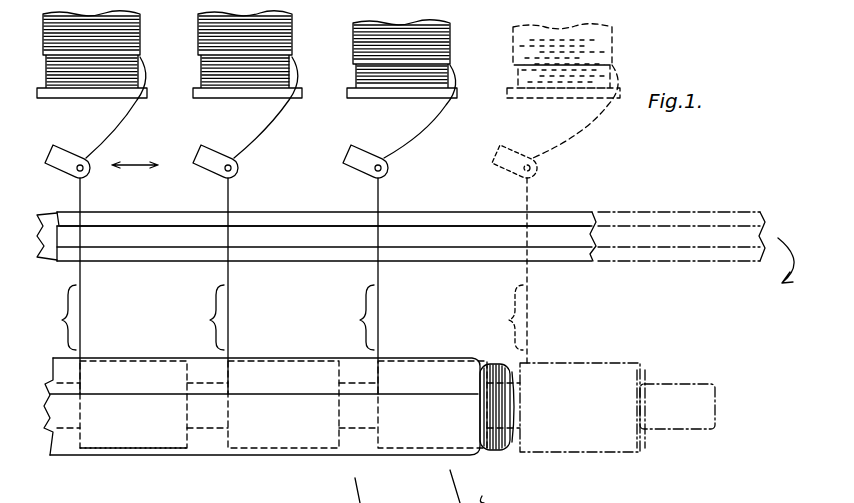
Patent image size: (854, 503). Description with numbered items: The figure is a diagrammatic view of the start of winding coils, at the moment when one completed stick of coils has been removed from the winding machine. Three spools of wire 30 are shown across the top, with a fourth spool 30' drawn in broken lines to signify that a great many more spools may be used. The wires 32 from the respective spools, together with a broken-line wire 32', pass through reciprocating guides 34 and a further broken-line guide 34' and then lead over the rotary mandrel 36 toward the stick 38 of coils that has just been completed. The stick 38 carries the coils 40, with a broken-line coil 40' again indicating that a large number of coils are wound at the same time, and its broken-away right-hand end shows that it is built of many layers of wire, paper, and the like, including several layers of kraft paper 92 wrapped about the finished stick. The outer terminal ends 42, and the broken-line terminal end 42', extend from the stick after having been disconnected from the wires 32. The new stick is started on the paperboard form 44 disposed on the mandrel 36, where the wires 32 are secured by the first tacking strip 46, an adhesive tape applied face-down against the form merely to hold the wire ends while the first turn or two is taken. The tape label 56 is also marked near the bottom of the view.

The spool of wire 30 is at (241, 70).
The fourth spool of wire 30' is at (550, 77).
The wire 32 is at (268, 225).
The wire (broken line) 32' is at (581, 214).
The reciprocating guide 34 is at (206, 171).
The reciprocating guide (broken line) 34' is at (499, 171).
The rotary mandrel 36 is at (52, 260).
The stick of coils 38 is at (246, 466).
The coil 40 is at (288, 387).
The coil (broken line) 40' is at (617, 389).
The outer terminal end 42 is at (240, 317).
The terminal end (broken line) 42' is at (546, 317).
The paperboard form 44 is at (561, 212).
The first tacking strip 46 is at (430, 228).
The kraft paper 92 is at (110, 446).
The tape 56 is at (583, 486).